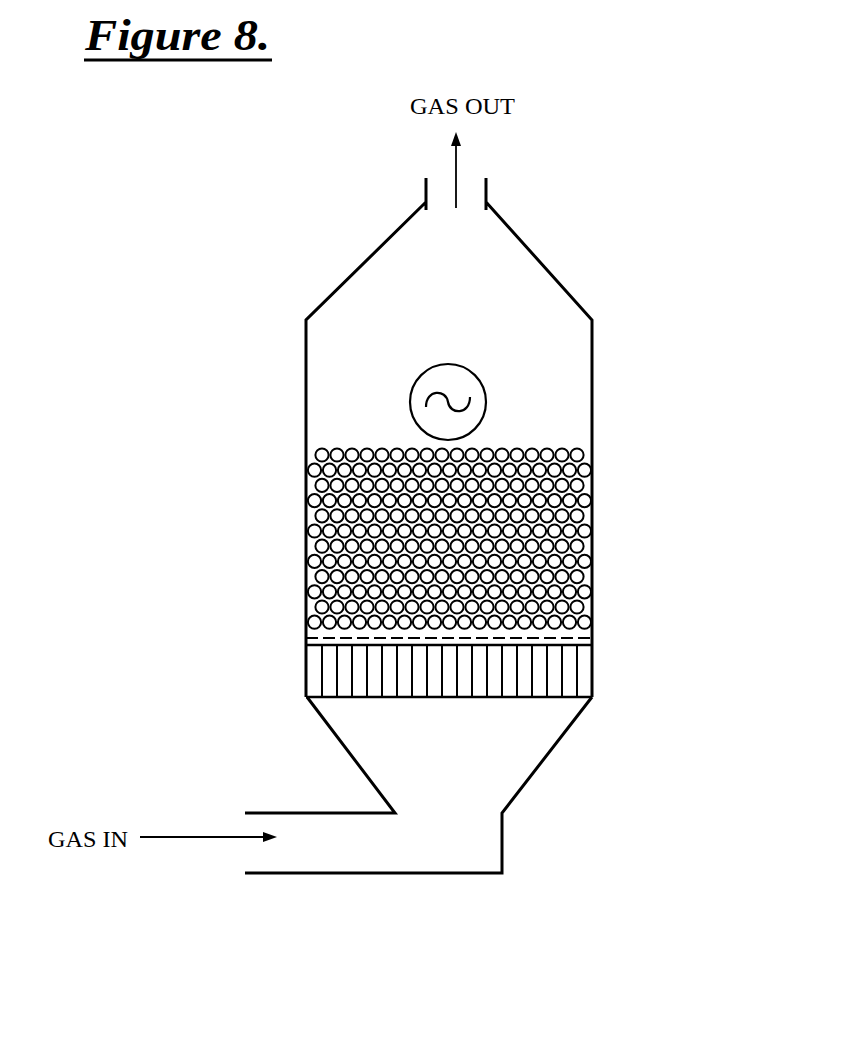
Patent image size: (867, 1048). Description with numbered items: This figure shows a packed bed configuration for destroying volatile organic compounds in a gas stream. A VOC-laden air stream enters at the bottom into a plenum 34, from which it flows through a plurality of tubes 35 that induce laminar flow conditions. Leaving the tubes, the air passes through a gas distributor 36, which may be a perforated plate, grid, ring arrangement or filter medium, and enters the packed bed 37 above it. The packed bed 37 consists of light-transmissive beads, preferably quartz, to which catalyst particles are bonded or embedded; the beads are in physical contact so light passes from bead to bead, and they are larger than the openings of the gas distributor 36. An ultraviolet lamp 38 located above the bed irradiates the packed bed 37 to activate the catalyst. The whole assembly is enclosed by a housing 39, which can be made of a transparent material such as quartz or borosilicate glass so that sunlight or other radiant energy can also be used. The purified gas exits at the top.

The plenum 34 is at (530, 747).
The tubes 35 is at (562, 672).
The gas distributor 36 is at (562, 637).
The packed bed 37 is at (570, 590).
The ultraviolet lamp 38 is at (500, 388).
The housing 39 is at (305, 403).